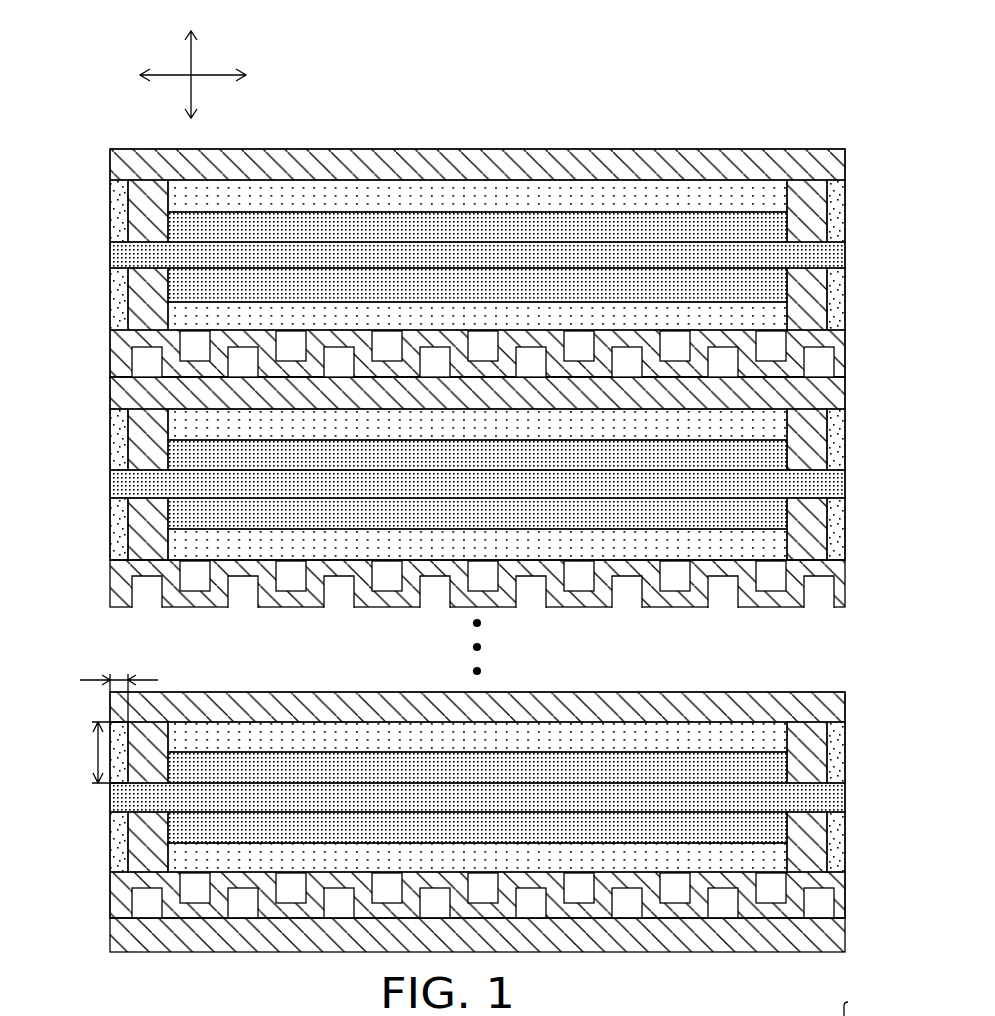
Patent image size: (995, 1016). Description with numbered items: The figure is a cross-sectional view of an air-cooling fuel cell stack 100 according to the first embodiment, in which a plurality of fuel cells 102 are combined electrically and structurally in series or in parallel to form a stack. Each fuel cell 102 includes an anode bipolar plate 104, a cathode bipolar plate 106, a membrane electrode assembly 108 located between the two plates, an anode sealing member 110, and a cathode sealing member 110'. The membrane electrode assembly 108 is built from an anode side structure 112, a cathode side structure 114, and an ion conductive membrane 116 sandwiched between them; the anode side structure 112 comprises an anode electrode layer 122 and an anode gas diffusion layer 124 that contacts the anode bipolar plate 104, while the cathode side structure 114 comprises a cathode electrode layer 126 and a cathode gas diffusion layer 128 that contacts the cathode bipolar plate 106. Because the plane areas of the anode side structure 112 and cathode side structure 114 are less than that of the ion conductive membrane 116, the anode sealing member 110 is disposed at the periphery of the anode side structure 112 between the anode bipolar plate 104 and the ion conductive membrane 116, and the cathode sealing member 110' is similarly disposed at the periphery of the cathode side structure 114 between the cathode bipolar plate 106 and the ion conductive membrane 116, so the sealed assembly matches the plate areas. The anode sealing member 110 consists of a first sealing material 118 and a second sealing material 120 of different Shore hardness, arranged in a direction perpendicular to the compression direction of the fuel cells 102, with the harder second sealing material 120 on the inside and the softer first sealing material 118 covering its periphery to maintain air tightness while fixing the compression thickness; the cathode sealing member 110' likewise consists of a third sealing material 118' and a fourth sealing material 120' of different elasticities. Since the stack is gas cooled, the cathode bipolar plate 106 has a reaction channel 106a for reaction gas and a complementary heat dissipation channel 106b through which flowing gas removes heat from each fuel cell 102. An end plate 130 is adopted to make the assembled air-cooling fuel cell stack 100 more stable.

The air-cooling fuel cell stack 100 is at (449, 508).
The fuel cell 102 is at (848, 607).
The anode bipolar plate 104 is at (118, 167).
The cathode bipolar plate 106 is at (116, 350).
The reaction channel 106a is at (291, 892).
The heat dissipation channel 106b is at (150, 905).
The membrane electrode assembly 108 is at (472, 445).
The anode sealing member 110 is at (424, 478).
The cathode sealing member 110' is at (423, 570).
The anode side structure 112 is at (477, 424).
The cathode side structure 114 is at (477, 469).
The ion conductive membrane 116 is at (125, 255).
The first sealing material 118 is at (451, 478).
The third sealing material 118' is at (451, 570).
The second sealing material 120 is at (442, 481).
The fourth sealing material 120' is at (442, 570).
The anode electrode layer 122 is at (556, 233).
The anode gas diffusion layer 124 is at (481, 196).
The cathode electrode layer 126 is at (336, 282).
The cathode gas diffusion layer 128 is at (398, 322).
The end plate 130 is at (836, 948).